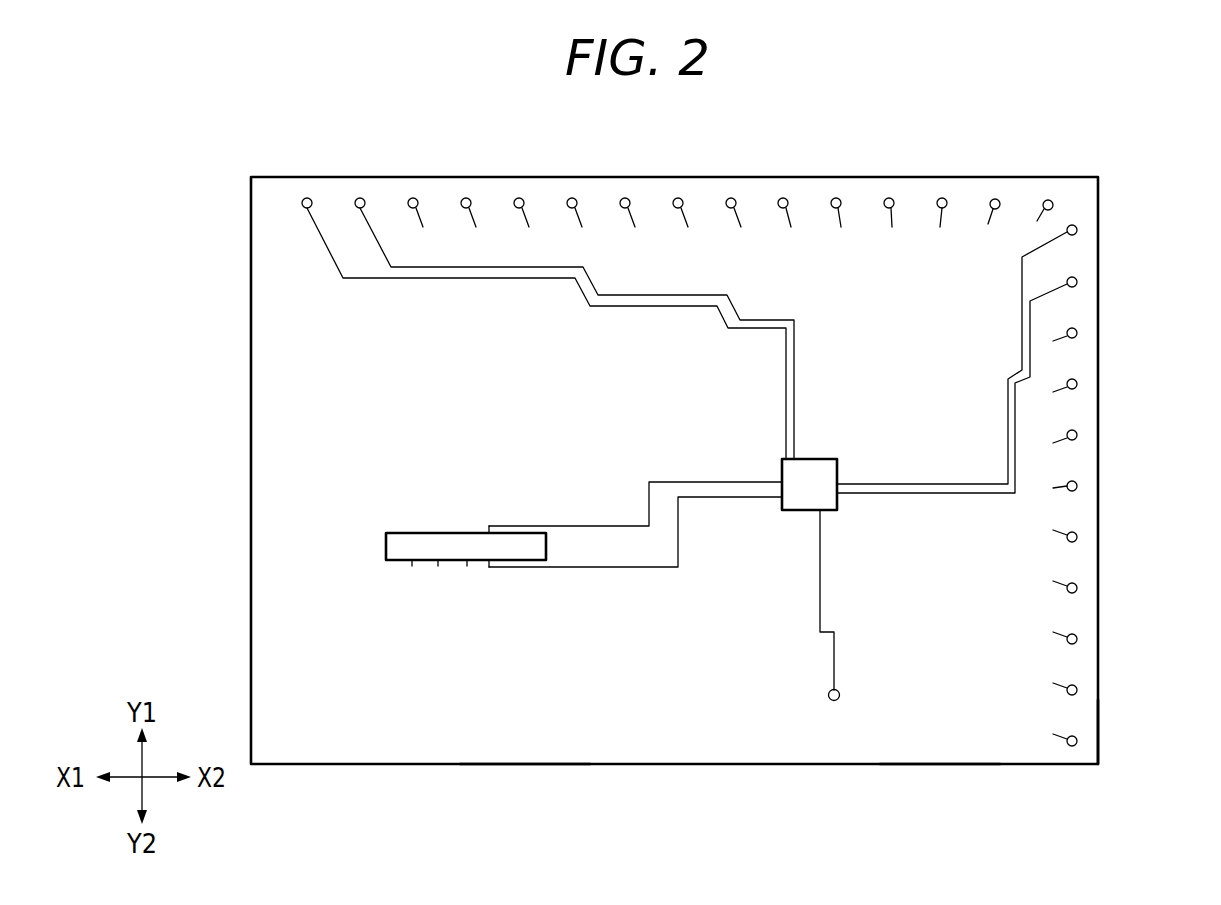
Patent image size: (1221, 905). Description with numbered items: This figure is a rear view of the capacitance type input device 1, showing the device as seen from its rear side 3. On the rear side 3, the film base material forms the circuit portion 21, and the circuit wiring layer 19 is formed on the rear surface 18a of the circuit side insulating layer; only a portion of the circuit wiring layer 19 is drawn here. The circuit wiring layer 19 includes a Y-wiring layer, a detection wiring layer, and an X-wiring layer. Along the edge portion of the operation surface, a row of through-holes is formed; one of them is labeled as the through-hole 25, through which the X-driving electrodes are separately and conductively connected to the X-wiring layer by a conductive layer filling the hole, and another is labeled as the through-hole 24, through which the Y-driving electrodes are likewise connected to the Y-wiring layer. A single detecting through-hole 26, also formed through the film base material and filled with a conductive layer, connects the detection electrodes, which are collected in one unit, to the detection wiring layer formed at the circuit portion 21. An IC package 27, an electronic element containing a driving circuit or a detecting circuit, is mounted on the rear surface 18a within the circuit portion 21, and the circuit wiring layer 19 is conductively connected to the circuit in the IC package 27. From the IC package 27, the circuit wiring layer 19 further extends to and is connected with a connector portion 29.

The capacitance type input device 1 is at (1136, 422).
The rear side 3 is at (1028, 753).
The rear surface of the circuit side insulating layer 18a is at (523, 745).
The circuit wiring layer 19 is at (763, 446).
The circuit portion 21 is at (943, 745).
The through-hole 24 is at (1078, 329).
The through-hole 25 is at (626, 198).
The through-hole 26 is at (840, 696).
The IC package 27 is at (780, 468).
The connector portion 29 is at (445, 531).